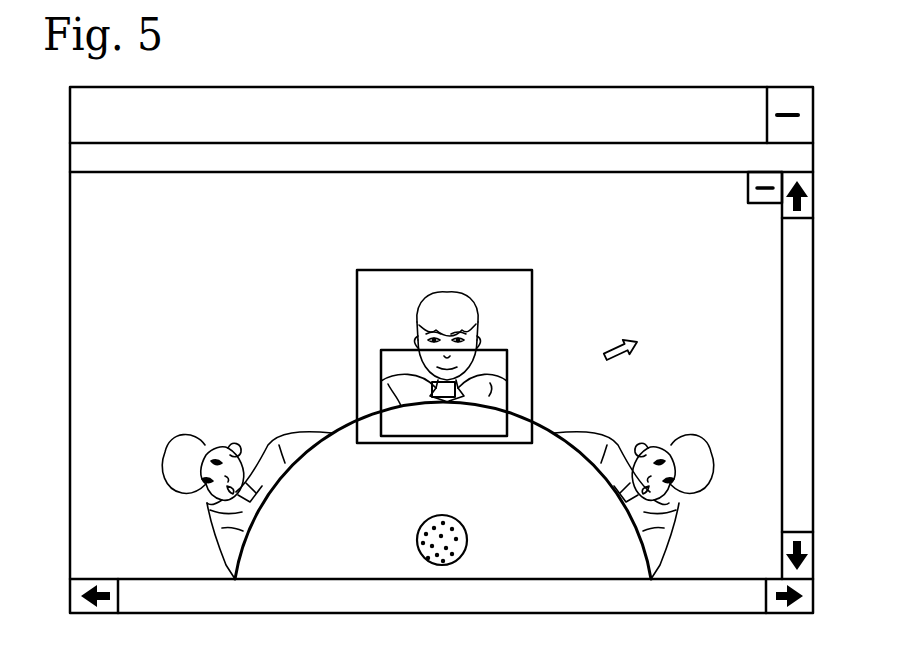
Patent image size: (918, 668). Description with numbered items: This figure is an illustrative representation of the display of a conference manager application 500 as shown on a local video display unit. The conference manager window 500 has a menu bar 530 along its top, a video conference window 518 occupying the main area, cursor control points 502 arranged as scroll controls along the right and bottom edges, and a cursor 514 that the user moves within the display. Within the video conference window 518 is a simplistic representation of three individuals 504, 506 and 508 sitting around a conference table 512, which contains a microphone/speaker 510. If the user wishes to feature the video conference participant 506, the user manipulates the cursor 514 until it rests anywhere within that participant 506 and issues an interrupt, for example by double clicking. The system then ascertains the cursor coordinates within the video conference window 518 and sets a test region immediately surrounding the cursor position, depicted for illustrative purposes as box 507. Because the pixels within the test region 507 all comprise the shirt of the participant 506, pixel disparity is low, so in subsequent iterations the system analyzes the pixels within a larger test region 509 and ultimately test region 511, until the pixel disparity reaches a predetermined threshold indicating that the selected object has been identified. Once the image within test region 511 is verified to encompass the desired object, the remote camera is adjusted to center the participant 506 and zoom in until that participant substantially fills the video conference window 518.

The conference manager application 500 is at (755, 87).
The cursor control points 502 is at (809, 181).
The individual 504 is at (191, 432).
The video conference participant 506 is at (433, 305).
The box 507 is at (446, 398).
The individual 508 is at (700, 460).
The test region 509 is at (381, 366).
The microphone/speaker 510 is at (445, 515).
The test region 511 is at (505, 270).
The conference table 512 is at (545, 462).
The cursor 514 is at (620, 338).
The video conference window 518 is at (706, 258).
The menu bar 530 is at (72, 155).